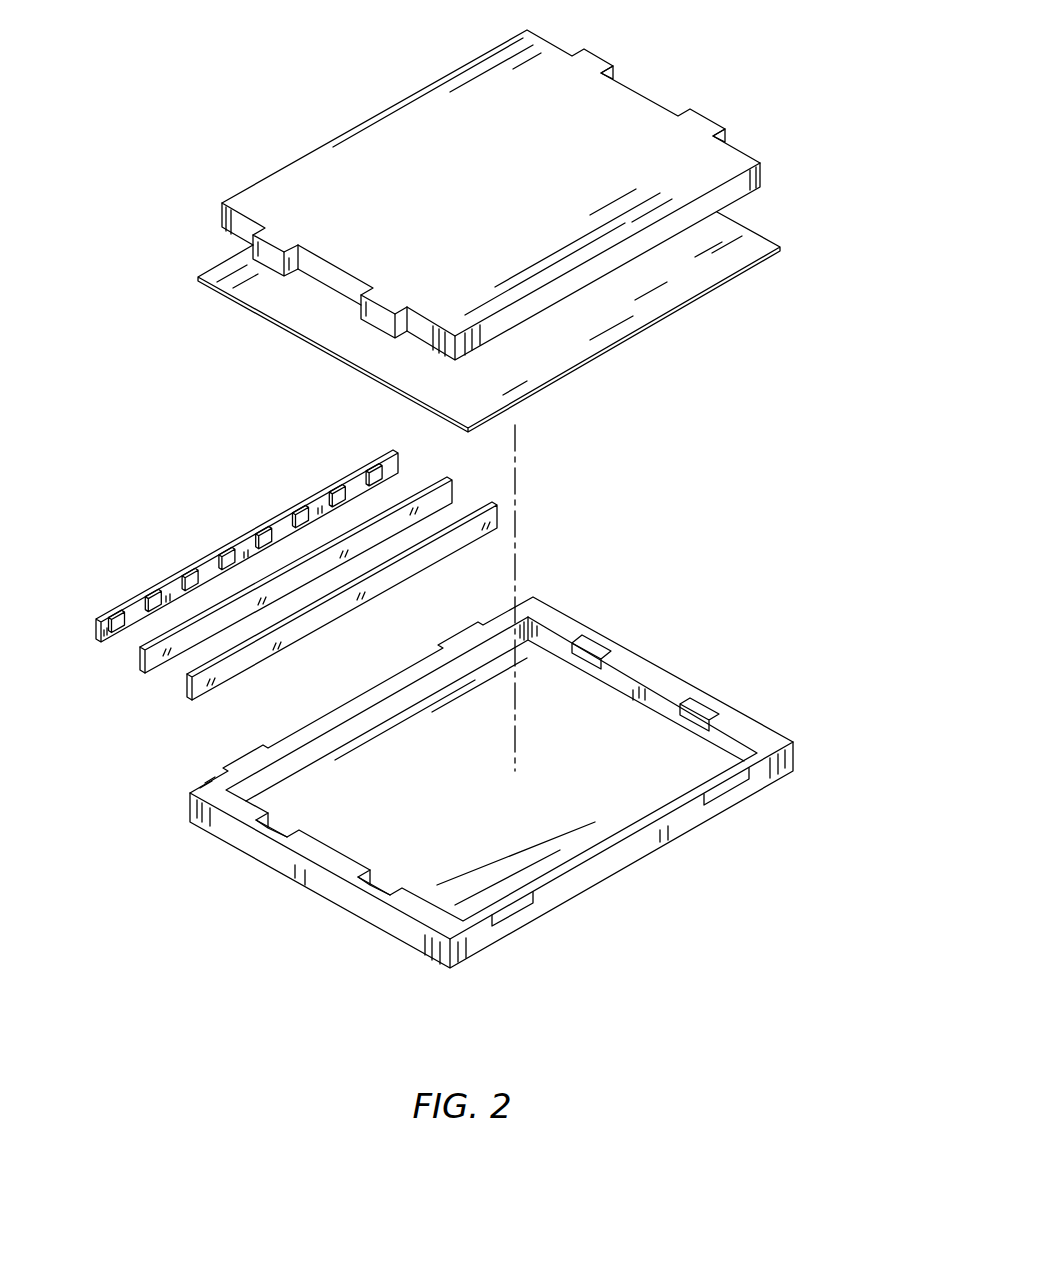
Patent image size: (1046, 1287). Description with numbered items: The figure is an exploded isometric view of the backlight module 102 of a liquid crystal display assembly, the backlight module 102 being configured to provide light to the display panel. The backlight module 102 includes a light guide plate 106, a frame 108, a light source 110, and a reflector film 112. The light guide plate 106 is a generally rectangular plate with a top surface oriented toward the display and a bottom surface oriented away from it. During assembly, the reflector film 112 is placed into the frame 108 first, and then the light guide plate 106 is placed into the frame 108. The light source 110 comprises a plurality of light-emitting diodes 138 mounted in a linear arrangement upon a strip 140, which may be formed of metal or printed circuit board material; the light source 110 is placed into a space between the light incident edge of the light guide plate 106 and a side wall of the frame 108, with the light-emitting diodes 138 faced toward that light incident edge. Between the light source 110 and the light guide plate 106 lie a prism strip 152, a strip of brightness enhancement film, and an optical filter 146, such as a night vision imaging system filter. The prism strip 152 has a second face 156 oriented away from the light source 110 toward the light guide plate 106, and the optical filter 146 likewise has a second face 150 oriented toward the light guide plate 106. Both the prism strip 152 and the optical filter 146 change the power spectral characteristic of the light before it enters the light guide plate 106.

The backlight module 102 is at (294, 68).
The light guide plate 106 is at (634, 72).
The frame 108 is at (656, 657).
The light source 110 is at (88, 604).
The reflector film 112 is at (676, 336).
The light-emitting diodes 138 is at (280, 532).
The strip 140 is at (172, 587).
The optical filter 146 is at (181, 701).
The second face of optical filter 150 is at (316, 622).
The prism strip 152 is at (136, 670).
The second face of prism strip 156 is at (440, 498).